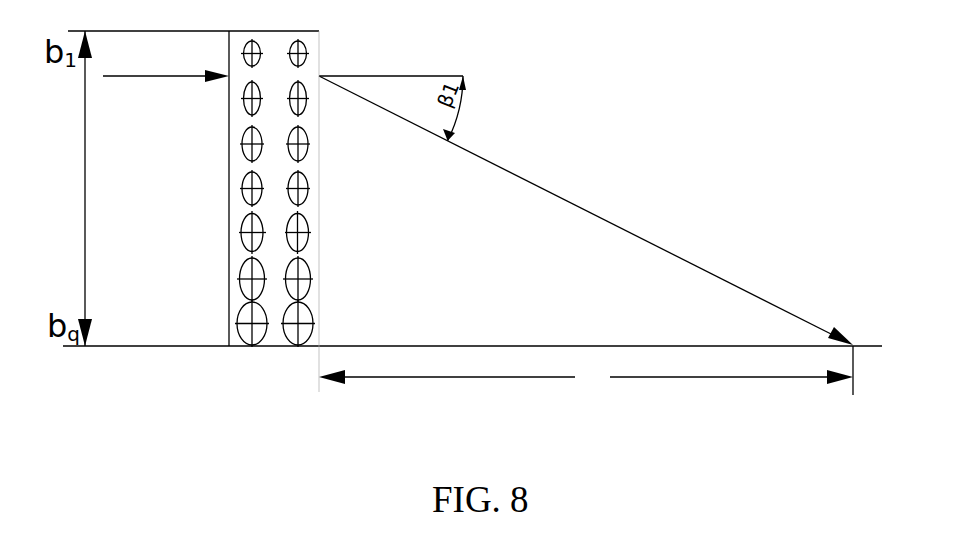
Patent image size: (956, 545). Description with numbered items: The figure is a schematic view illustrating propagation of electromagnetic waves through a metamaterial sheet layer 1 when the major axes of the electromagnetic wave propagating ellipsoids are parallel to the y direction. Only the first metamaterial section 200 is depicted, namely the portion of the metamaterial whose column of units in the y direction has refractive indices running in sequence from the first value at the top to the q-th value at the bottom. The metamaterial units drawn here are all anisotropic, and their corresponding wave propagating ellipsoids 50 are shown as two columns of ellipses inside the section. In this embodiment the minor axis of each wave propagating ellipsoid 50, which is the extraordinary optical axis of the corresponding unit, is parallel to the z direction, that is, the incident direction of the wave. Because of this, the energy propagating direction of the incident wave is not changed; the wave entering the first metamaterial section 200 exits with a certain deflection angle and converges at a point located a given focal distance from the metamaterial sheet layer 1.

The first metamaterial section 200 is at (294, 189).
The wave propagating ellipsoid 50 is at (308, 318).
The metamaterial sheet layer 1 is at (586, 370).